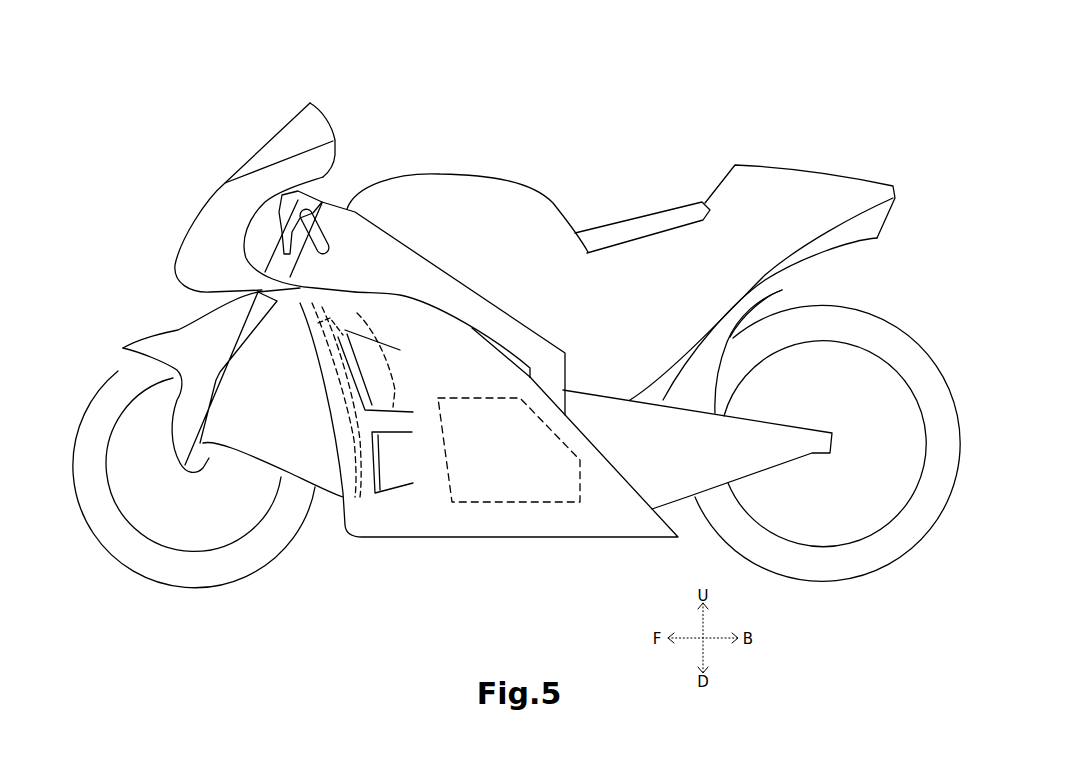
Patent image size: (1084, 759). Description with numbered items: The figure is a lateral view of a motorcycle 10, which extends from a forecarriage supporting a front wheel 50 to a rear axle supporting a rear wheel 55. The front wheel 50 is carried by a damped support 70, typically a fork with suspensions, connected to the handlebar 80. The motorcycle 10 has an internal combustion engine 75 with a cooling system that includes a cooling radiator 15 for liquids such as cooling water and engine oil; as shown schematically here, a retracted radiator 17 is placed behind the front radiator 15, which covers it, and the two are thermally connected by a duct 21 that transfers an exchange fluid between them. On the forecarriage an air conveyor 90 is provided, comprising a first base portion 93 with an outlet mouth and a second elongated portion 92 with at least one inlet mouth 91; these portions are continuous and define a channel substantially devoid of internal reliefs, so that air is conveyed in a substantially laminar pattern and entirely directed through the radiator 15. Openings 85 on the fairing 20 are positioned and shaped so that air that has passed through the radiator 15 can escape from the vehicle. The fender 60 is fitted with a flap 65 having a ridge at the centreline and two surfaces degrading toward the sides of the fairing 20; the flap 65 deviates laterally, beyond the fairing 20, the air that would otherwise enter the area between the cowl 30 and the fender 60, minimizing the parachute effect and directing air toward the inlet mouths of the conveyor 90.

The motorcycle 10 is at (680, 118).
The cooling radiator 15 is at (357, 500).
The retracted radiator 17 is at (382, 337).
The fairing 20 is at (492, 370).
The duct 21 is at (342, 328).
The cowl 30 is at (218, 210).
The front wheel 50 is at (113, 523).
The rear wheel 55 is at (880, 550).
The fender 60 is at (160, 347).
The flap 65 is at (227, 327).
The damped support 70 is at (263, 313).
The internal combustion engine 75 is at (487, 480).
The handlebar 80 is at (297, 208).
The openings 85 is at (365, 377).
The air conveyor 90 is at (293, 487).
The inlet mouth 91 is at (233, 367).
The second elongated portion 92 is at (238, 433).
The first base portion 93 is at (333, 457).